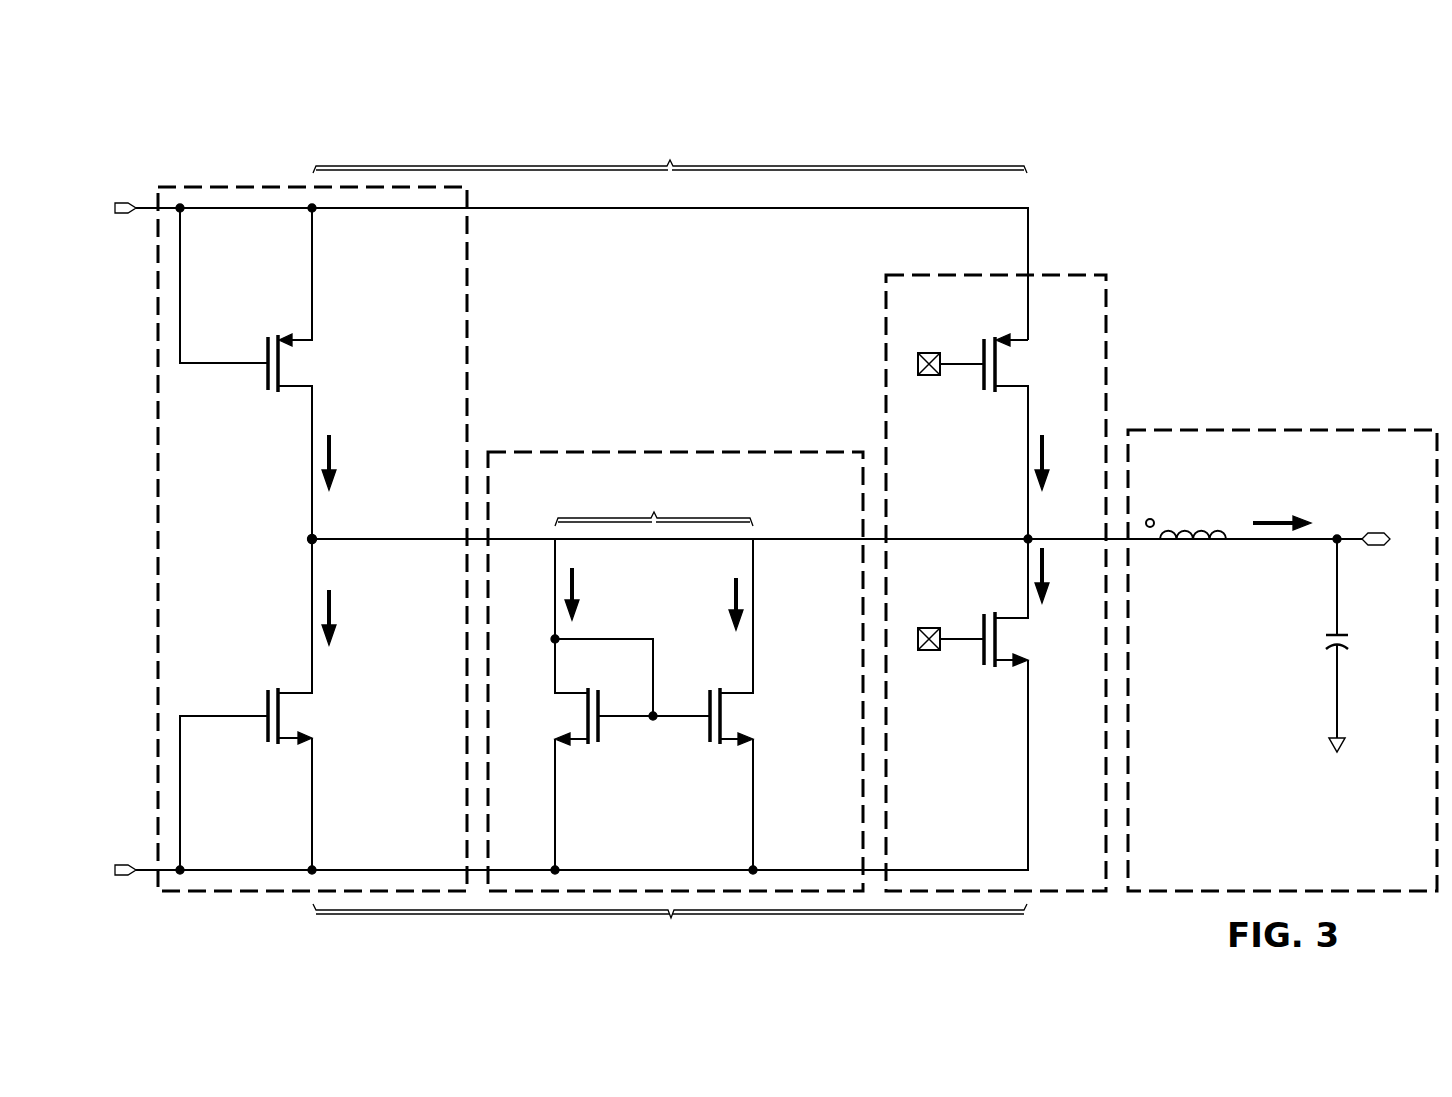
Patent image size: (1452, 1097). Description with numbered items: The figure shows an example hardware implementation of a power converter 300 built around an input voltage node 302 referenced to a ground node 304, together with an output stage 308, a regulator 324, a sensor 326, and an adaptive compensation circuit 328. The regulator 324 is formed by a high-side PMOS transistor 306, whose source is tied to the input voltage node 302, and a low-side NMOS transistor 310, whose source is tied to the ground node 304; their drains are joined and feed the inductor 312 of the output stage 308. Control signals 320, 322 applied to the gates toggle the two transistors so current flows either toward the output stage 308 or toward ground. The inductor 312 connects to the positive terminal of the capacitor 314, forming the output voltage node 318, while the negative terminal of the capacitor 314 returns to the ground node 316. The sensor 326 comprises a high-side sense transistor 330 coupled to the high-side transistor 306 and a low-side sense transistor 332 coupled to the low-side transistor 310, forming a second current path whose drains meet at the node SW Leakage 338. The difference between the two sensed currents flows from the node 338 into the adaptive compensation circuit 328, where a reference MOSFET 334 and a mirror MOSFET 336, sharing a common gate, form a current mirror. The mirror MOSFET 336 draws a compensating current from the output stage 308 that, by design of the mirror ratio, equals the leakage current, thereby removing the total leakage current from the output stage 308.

The power converter 300 is at (866, 120).
The input voltage node 302 is at (122, 202).
The ground node 304 is at (120, 878).
The high-side transistor 306 is at (980, 353).
The output stage 308 is at (1321, 431).
The low-side transistor 310 is at (980, 652).
The inductor 312 is at (1215, 521).
The capacitor 314 is at (1355, 645).
The ground node 316 is at (1345, 748).
The output voltage node 318 is at (1375, 530).
The control signal 320 is at (930, 352).
The control signal 322 is at (928, 652).
The regulator 324 is at (1107, 387).
The sensor 326 is at (272, 187).
The adaptive compensation circuit 328 is at (622, 451).
The high-side sense transistor 330 is at (266, 352).
The low-side sense transistor 332 is at (266, 728).
The reference MOSFET 334 is at (606, 728).
The mirror MOSFET 336 is at (701, 728).
The node SW Leakage 338 is at (306, 538).